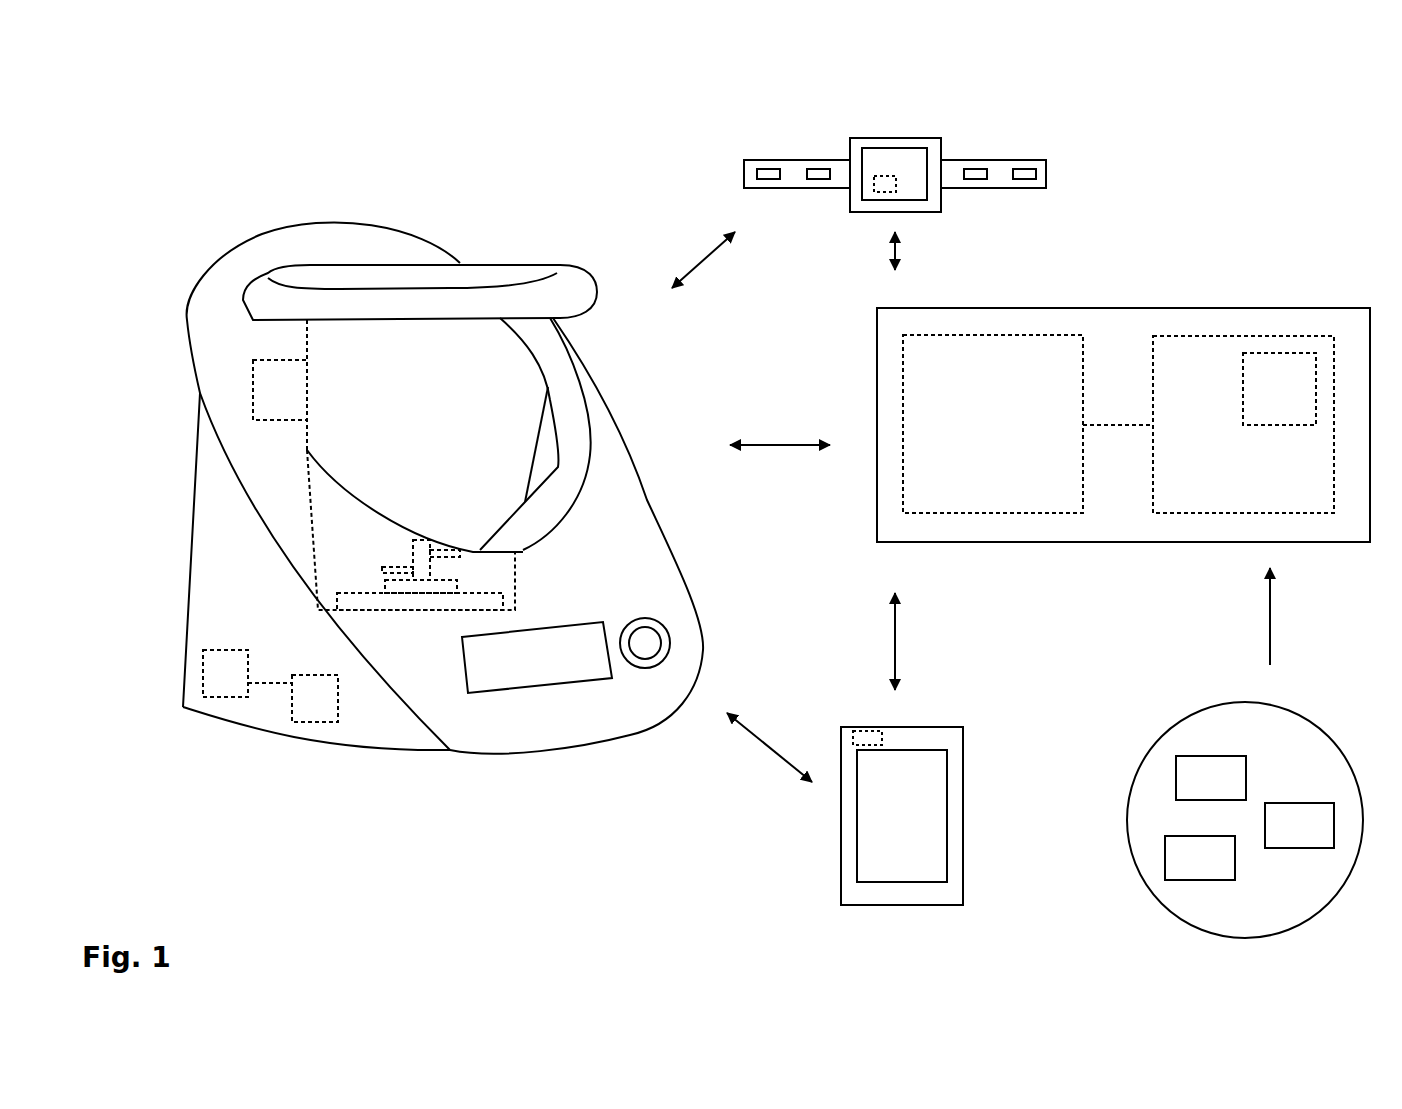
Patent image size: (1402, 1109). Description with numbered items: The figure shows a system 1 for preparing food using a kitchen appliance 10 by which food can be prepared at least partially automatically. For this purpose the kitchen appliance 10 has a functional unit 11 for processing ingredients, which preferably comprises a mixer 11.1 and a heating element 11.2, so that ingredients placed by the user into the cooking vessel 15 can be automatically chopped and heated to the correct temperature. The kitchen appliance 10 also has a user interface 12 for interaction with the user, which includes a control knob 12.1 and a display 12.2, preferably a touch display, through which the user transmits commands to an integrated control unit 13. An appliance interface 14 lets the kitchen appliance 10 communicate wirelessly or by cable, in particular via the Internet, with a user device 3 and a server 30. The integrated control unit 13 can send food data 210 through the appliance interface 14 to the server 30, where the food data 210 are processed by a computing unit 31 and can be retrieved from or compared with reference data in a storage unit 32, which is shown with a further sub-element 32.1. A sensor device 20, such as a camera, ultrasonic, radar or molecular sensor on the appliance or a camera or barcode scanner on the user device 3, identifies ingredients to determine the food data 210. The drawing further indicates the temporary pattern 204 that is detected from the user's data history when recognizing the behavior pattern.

The system 1 is at (1322, 169).
The kitchen appliance 10 is at (176, 211).
The functional unit 11 is at (404, 486).
The mixer 11.1 is at (422, 557).
The heating element 11.2 is at (480, 603).
The user interface 12 is at (573, 710).
The control knob 12.1 is at (662, 625).
The display 12.2 is at (475, 680).
The integrated control unit 13 is at (310, 715).
The appliance interface 14 is at (215, 693).
The cooking vessel 15 is at (488, 372).
The sensor device 20 is at (253, 390).
The user device 3 is at (940, 146).
The server 30 is at (1147, 543).
The computing unit 31 is at (945, 335).
The storage unit 32 is at (1173, 335).
The database 32.1 is at (1291, 353).
The temporary pattern 204 is at (1205, 762).
The food data 210 is at (700, 260).